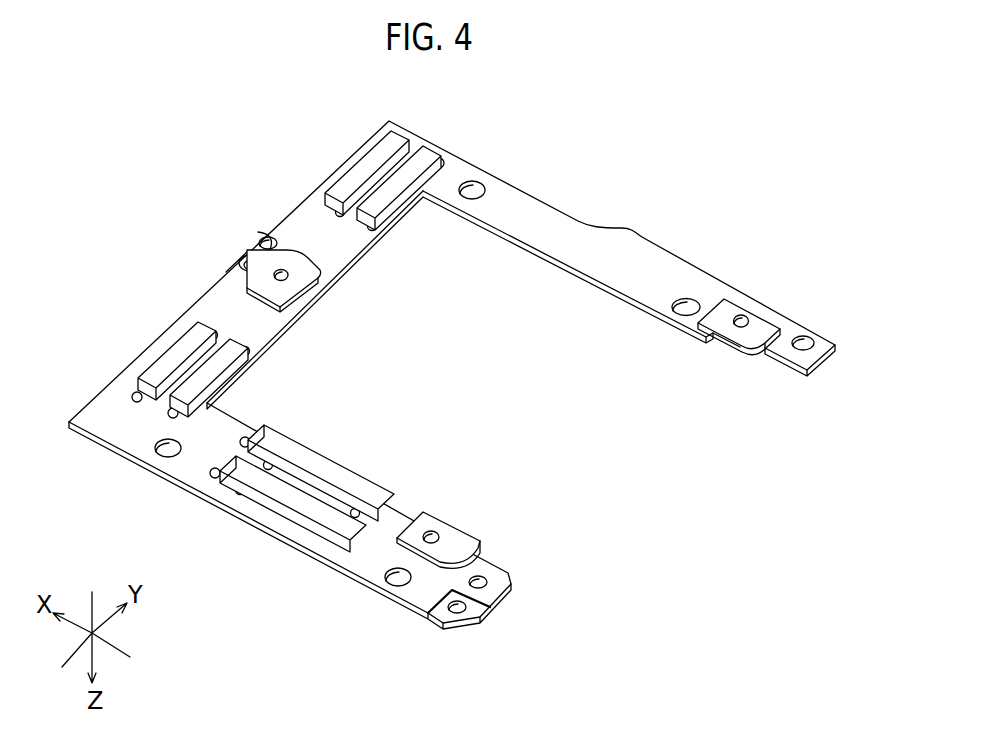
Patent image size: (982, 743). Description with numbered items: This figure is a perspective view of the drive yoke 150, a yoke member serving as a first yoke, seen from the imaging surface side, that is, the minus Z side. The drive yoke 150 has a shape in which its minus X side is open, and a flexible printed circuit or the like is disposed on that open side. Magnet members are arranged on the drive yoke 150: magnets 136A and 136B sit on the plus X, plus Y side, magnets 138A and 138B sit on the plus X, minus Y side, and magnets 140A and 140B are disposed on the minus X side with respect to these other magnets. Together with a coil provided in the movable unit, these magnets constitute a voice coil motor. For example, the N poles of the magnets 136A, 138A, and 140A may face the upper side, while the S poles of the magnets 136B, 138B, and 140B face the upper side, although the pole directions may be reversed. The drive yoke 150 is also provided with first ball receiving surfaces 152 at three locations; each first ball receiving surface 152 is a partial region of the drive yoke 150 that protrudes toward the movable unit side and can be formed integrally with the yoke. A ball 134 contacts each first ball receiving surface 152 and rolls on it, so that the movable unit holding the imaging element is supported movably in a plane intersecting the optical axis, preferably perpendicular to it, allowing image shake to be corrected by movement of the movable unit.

The drive yoke 150 is at (605, 156).
The first ball receiving surface 152 is at (298, 256).
The ball 134 is at (284, 274).
The magnet 136A is at (363, 172).
The magnet 136B is at (418, 165).
The magnet 138A is at (176, 356).
The magnet 138B is at (212, 366).
The magnet 140A is at (337, 473).
The magnet 140B is at (285, 497).